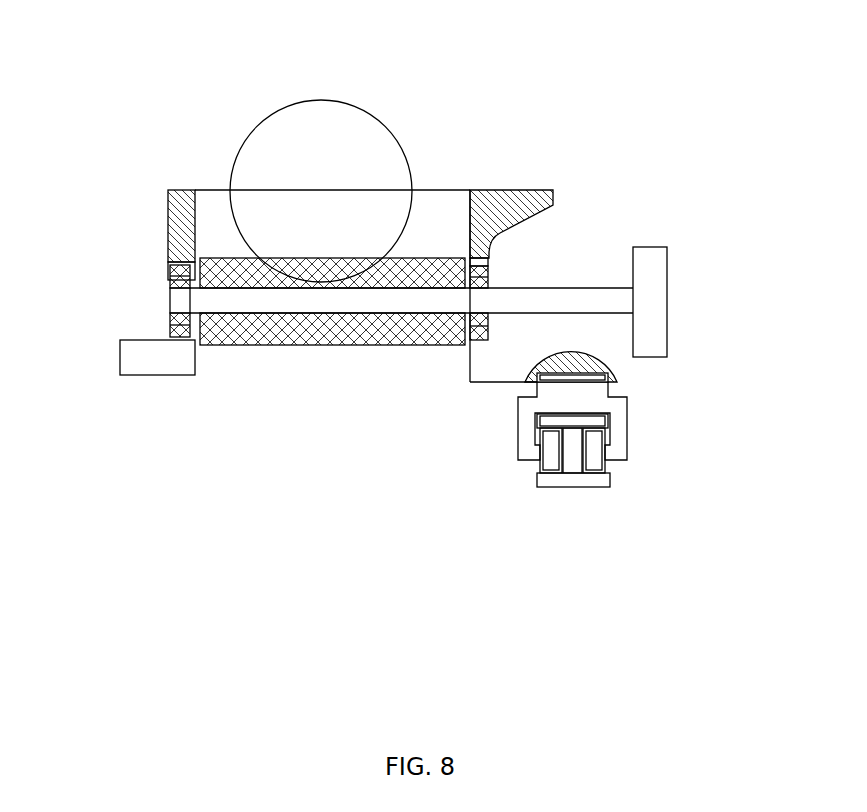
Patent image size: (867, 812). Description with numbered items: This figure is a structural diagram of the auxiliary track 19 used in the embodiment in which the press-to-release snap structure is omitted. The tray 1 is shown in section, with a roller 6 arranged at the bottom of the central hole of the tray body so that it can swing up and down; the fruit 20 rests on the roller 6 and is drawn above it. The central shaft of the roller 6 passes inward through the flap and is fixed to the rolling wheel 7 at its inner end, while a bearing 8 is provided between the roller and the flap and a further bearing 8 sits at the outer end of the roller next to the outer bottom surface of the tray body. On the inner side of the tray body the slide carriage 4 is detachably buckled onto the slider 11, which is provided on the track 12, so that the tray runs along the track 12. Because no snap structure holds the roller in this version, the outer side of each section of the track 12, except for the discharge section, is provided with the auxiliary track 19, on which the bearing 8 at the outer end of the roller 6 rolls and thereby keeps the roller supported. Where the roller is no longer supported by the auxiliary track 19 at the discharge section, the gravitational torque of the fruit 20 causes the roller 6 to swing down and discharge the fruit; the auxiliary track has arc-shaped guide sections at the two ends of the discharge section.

The tray 1 is at (168, 223).
The fruit 20 is at (257, 170).
The bearing 8 is at (170, 330).
The auxiliary track 19 is at (168, 367).
The roller 6 is at (233, 343).
The rolling wheel 7 is at (655, 313).
The slide carriage 4 is at (498, 235).
The slider 11 is at (597, 403).
The track 12 is at (575, 477).